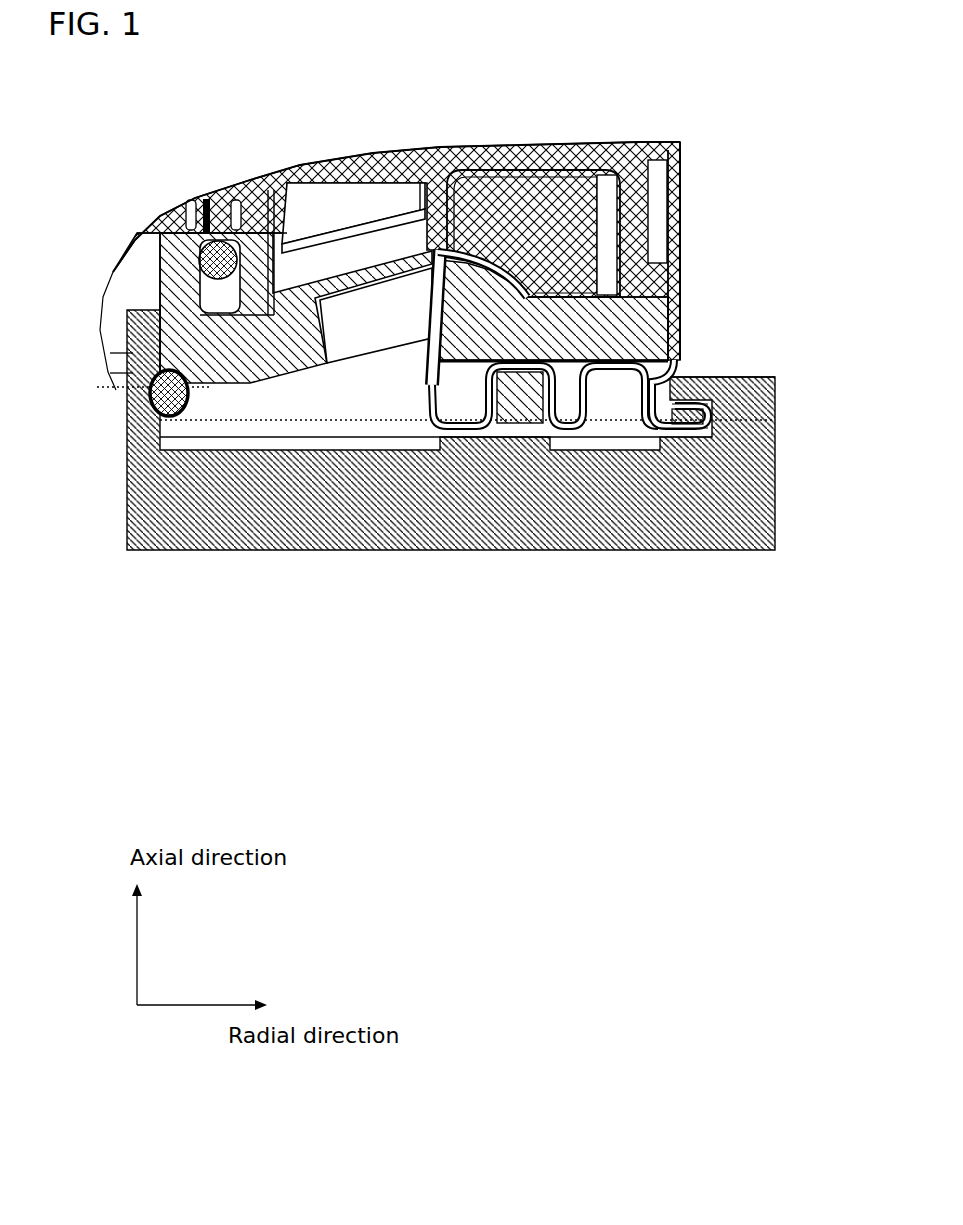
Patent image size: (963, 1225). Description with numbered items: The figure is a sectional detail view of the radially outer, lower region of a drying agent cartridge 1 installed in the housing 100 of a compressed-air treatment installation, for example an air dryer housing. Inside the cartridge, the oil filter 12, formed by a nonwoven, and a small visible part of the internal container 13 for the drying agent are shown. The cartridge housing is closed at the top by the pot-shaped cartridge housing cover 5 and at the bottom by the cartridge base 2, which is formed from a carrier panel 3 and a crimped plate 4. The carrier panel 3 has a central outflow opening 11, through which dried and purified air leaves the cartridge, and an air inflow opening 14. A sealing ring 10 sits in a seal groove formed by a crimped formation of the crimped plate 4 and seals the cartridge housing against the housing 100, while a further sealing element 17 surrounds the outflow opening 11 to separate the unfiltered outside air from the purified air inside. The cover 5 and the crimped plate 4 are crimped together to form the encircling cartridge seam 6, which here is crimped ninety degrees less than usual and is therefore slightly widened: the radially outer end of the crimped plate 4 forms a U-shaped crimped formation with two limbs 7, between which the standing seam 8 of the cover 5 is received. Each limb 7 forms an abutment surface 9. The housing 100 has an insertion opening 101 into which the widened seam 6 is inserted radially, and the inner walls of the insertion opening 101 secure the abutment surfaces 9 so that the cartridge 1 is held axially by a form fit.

The drying agent cartridge 1 is at (405, 100).
The cartridge base 2 is at (740, 318).
The carrier panel 3 is at (670, 323).
The crimped plate 4 is at (422, 350).
The cartridge housing cover 5 is at (675, 212).
The cartridge seam 6 is at (700, 447).
The limbs 7 is at (710, 401).
The standing seam 8 is at (706, 418).
The abutment surface 9 is at (683, 395).
The sealing ring 10 is at (520, 440).
The outflow opening 11 is at (112, 358).
The oil filter 12 is at (569, 195).
The internal container 13 is at (535, 148).
The air inflow opening 14 is at (370, 330).
The sealing element 17 is at (167, 417).
The housing 100 is at (605, 535).
The insertion opening 101 is at (715, 385).